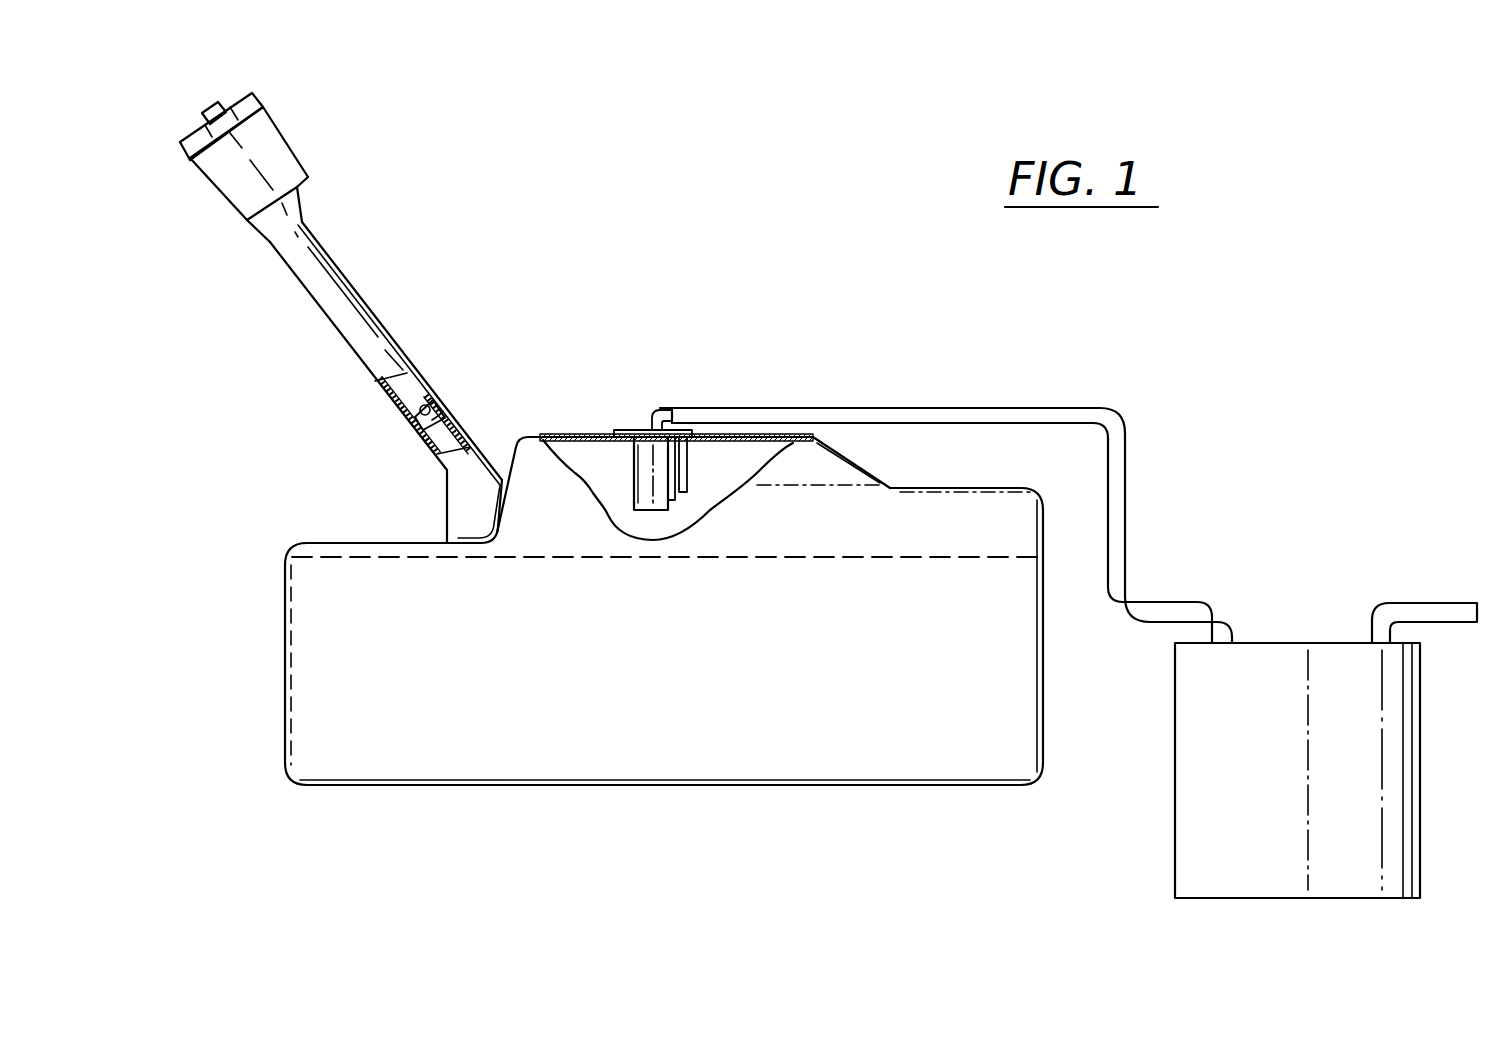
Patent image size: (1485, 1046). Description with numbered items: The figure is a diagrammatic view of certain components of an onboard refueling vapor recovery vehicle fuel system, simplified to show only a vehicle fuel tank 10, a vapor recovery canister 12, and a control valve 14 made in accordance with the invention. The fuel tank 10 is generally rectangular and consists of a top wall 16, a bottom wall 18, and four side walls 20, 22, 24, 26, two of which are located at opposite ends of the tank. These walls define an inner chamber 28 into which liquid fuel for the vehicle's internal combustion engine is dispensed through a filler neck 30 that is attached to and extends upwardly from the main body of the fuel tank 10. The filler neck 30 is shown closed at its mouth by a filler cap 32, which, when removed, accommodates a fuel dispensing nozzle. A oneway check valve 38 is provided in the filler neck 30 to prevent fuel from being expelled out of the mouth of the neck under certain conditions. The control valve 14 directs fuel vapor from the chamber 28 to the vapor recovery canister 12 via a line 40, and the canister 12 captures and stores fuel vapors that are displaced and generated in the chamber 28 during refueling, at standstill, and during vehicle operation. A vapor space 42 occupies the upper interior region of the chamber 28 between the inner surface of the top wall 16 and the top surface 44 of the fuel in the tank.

The vehicle fuel tank 10 is at (647, 697).
The vapor recovery canister 12 is at (1327, 598).
The control valve 14 is at (621, 494).
The top wall 16 is at (578, 430).
The bottom wall 18 is at (563, 788).
The side wall 20 is at (860, 758).
The side wall 22 is at (372, 541).
The side wall 24 is at (275, 650).
The side wall 26 is at (1050, 674).
The inner chamber 28 is at (747, 440).
The filler neck 30 is at (337, 258).
The filler cap 32 is at (253, 95).
The oneway check valve 38 is at (421, 386).
The line 40 is at (985, 407).
The vapor space 42 is at (605, 473).
The top surface of the fuel 44 is at (868, 553).